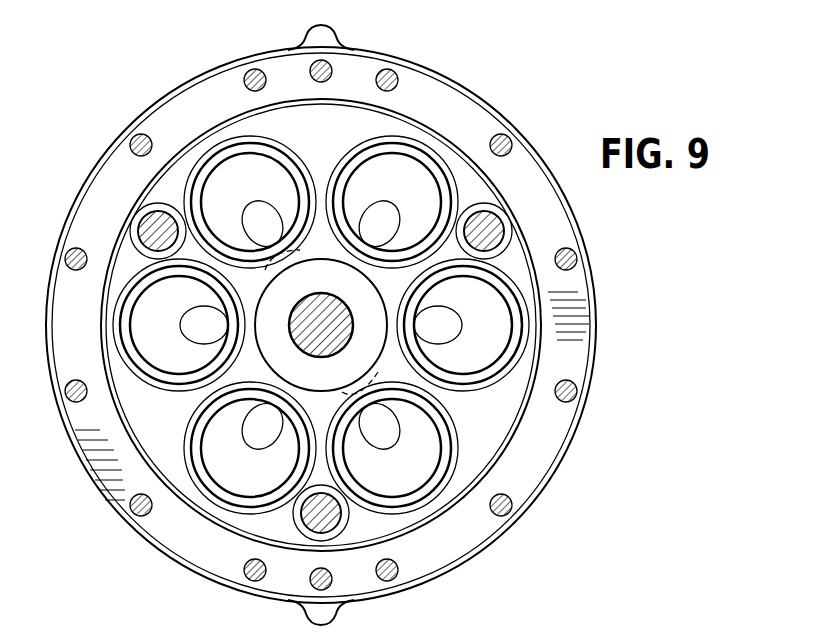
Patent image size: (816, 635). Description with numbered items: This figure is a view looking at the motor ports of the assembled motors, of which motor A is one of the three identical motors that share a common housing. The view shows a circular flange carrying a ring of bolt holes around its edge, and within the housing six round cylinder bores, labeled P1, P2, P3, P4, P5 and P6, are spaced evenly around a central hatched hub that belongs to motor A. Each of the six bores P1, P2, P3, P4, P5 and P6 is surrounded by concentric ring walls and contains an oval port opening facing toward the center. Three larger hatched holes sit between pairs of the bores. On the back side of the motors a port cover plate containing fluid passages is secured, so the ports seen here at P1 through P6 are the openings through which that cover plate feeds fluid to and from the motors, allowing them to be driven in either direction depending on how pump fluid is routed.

The motor A is at (346, 325).
The piston cylinder P1 is at (392, 202).
The piston cylinder P2 is at (463, 325).
The piston cylinder P3 is at (392, 448).
The piston cylinder P4 is at (250, 448).
The piston cylinder P5 is at (179, 325).
The piston cylinder P6 is at (250, 202).